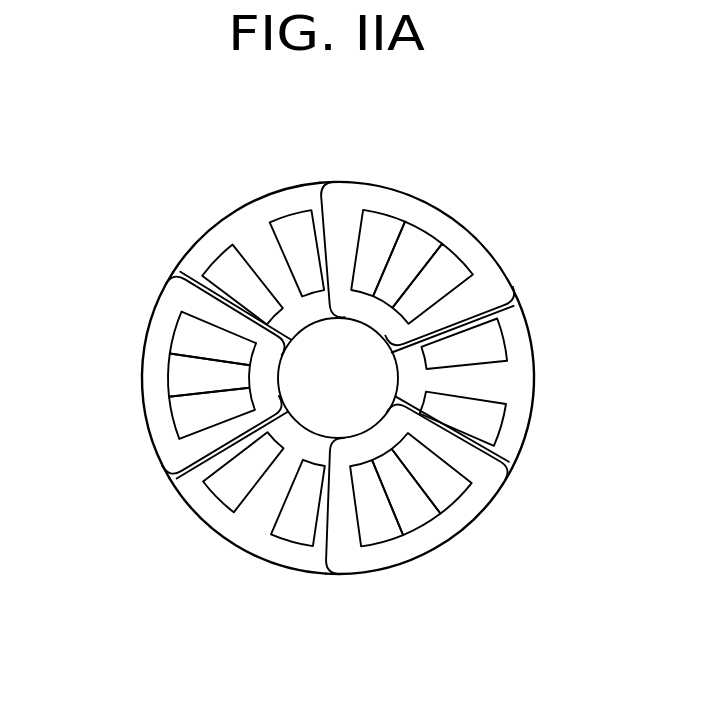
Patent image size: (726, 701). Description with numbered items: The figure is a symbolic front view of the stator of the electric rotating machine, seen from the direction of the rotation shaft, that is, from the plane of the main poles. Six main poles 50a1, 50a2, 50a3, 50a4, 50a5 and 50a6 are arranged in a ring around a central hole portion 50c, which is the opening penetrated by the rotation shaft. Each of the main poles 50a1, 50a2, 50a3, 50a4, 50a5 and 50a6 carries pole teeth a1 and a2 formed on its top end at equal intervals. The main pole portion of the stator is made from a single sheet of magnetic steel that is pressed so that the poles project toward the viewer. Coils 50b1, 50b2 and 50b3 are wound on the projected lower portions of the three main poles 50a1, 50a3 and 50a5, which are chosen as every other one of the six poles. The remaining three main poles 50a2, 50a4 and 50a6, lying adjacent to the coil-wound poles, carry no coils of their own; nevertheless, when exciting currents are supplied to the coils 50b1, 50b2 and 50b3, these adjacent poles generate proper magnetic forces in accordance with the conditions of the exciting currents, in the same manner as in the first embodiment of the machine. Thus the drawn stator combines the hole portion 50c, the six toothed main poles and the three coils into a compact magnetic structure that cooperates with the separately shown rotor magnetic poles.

The main pole 50a1 is at (420, 220).
The main pole 50a2 is at (515, 388).
The main pole 50a3 is at (435, 535).
The main pole 50a4 is at (252, 518).
The main pole 50a5 is at (165, 367).
The main pole 50a6 is at (252, 238).
The coil 50b1 is at (453, 237).
The coil 50b2 is at (420, 543).
The coil 50b3 is at (143, 380).
The hole portion 50c is at (317, 398).
The pole tooth a1 is at (377, 227).
The pole tooth a2 is at (450, 270).